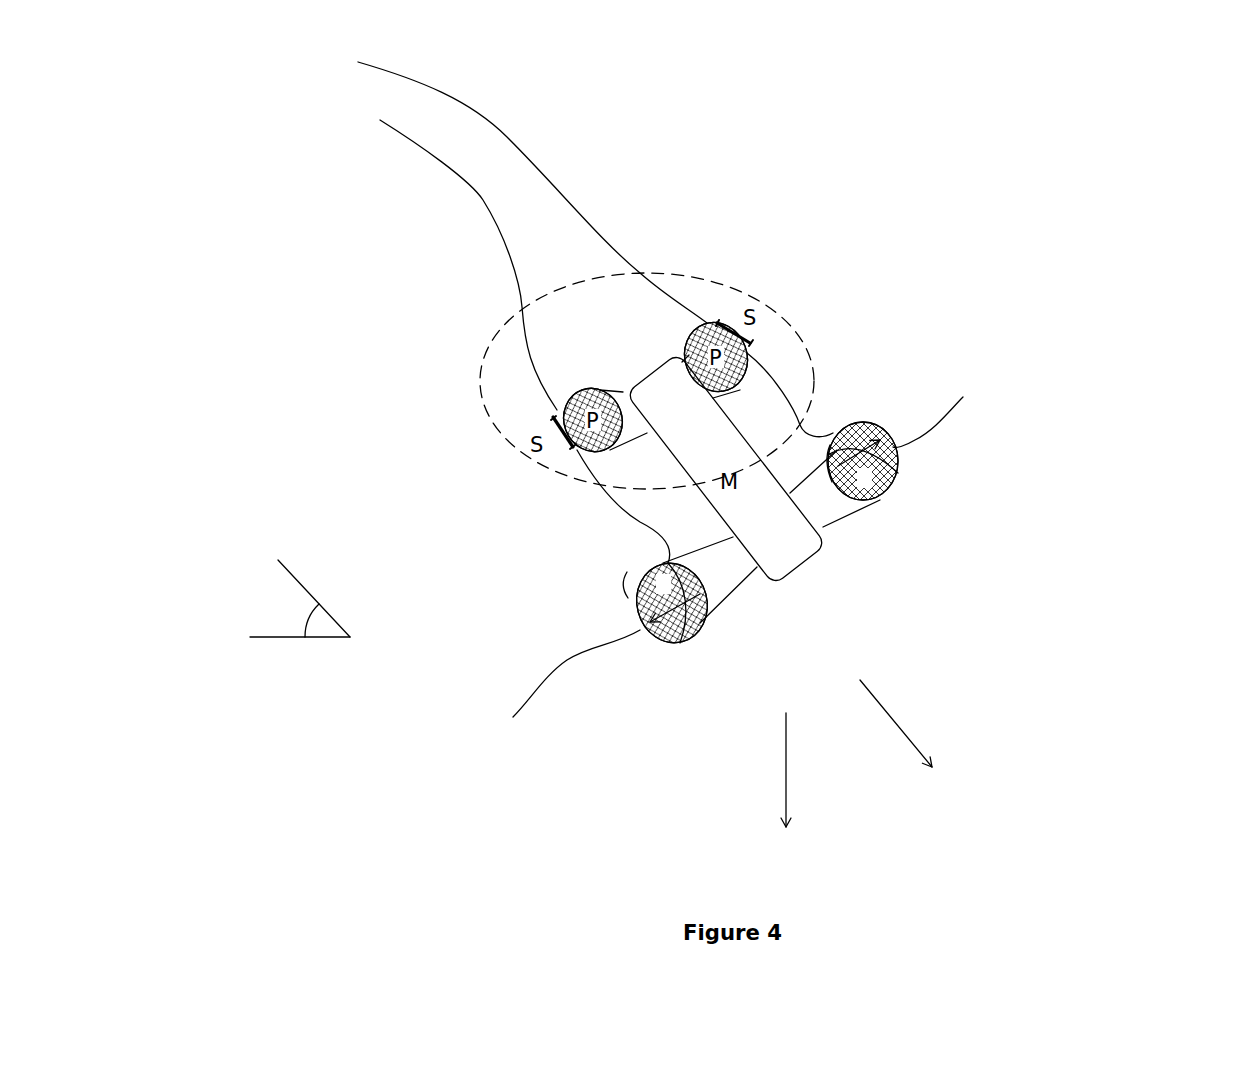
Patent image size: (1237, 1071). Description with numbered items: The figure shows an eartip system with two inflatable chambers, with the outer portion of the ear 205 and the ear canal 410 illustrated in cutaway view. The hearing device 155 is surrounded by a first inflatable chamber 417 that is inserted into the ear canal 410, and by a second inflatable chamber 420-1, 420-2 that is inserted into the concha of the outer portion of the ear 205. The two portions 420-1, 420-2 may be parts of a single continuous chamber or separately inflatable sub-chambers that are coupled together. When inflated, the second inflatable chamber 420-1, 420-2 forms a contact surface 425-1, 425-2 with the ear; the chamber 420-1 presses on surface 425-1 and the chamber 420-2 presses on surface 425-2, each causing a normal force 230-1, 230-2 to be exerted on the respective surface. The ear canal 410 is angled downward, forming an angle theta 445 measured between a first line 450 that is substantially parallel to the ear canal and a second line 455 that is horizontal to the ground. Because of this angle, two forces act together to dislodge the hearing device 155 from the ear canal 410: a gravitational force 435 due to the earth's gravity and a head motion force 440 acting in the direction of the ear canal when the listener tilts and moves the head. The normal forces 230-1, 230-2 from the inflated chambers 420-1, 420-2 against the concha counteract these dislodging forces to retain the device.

The ear canal 410 is at (497, 192).
The first inflatable chamber 417 is at (487, 375).
The hearing device 155 is at (712, 441).
The second inflatable chamber 420-1 is at (650, 628).
The second inflatable chamber 420-2 is at (887, 440).
The contact surface 425-1 is at (637, 592).
The contact surface 425-2 is at (887, 500).
The first normal force 230-1 is at (687, 640).
The second normal force 230-2 is at (893, 480).
The outer portion of an ear 205 is at (990, 410).
The gravitational force 435 is at (785, 763).
The head motion force 440 is at (883, 708).
The angle θ 445 is at (290, 617).
The first line 450 is at (290, 568).
The second line 455 is at (287, 640).